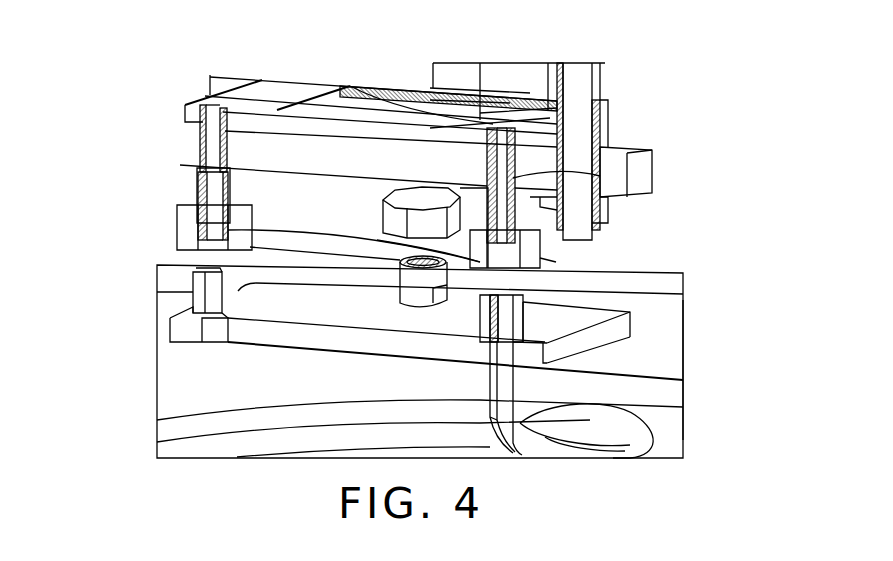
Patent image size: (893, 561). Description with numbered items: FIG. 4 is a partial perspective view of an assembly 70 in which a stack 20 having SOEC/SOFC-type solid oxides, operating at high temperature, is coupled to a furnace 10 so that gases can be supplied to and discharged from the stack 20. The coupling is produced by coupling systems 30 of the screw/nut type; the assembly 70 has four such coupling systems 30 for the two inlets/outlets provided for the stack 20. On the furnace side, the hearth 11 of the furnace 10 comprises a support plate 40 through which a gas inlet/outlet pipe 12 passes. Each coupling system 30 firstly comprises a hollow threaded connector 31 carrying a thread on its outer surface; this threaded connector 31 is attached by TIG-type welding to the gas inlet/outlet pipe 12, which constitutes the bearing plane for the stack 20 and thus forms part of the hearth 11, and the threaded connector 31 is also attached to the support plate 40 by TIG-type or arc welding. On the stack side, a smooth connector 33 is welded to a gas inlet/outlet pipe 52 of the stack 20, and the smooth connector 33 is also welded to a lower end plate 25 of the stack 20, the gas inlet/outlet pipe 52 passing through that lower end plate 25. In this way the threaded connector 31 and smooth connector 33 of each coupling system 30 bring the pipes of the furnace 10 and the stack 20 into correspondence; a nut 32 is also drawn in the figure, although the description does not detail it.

The furnace 10 is at (177, 364).
The hearth 11 is at (645, 350).
The gas inlet/outlet pipe 12 is at (600, 412).
The stack 20 is at (292, 145).
The lower end plate 25 is at (350, 153).
The coupling system 30 is at (553, 258).
The hollow threaded connector 31 is at (157, 292).
The nut 32 is at (177, 225).
The smooth connector 33 is at (195, 188).
The support plate 40 is at (278, 295).
The gas inlet/outlet pipe 52 is at (190, 143).
The assembly 70 is at (642, 93).